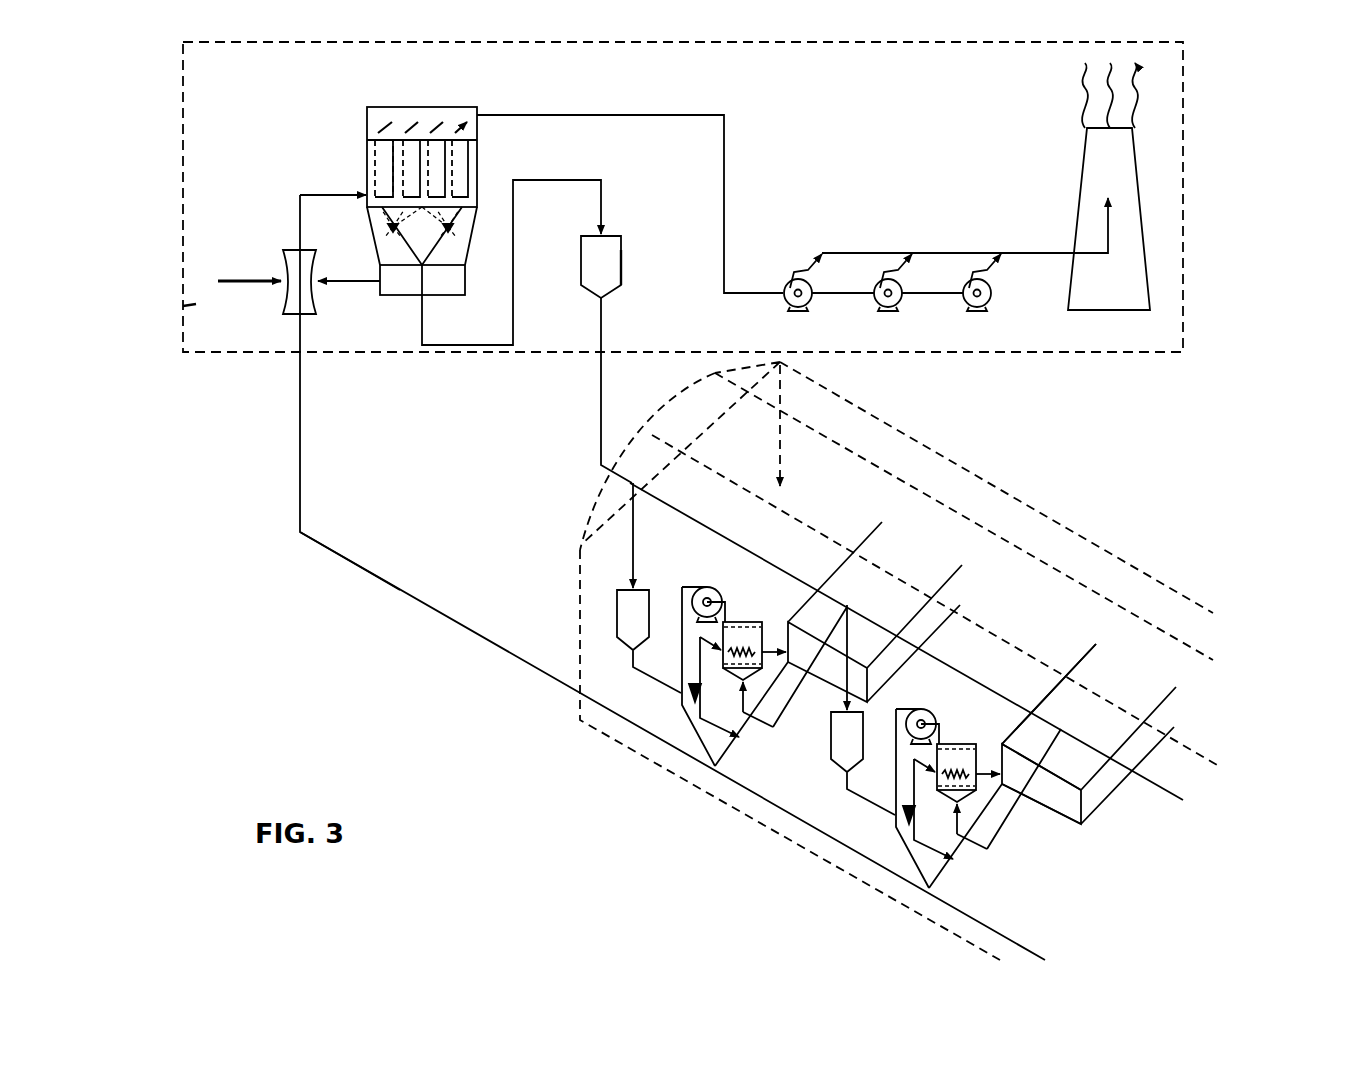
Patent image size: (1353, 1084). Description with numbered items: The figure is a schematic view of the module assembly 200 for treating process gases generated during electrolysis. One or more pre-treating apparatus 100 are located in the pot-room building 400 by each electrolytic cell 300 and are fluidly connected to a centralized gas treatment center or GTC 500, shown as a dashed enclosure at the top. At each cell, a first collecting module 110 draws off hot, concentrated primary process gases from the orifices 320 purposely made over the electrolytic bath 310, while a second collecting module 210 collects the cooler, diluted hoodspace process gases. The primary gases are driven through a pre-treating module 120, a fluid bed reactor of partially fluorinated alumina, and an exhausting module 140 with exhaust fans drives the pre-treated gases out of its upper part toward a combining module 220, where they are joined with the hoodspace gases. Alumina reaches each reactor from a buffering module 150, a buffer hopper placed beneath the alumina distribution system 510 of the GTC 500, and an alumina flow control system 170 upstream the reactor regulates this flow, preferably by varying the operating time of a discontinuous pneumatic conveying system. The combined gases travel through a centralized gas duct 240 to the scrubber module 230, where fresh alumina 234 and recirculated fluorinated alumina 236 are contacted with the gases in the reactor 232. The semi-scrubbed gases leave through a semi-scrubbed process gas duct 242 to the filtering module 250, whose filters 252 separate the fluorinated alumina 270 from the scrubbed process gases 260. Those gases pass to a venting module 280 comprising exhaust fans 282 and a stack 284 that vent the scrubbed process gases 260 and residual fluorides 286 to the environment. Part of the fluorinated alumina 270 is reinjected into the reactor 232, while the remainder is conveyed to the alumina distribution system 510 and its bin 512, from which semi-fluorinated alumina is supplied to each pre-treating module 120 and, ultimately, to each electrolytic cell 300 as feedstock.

The apparatus 100 is at (607, 780).
The collecting unit 110 is at (788, 718).
The pre-treating unit 120 is at (750, 620).
The exhausting unit 140 is at (726, 582).
The buffering unit 150 is at (612, 615).
The alumina flow control system 170 is at (692, 705).
The module assembly 200 is at (247, 676).
The second collecting module 210 is at (1047, 765).
The combining module 220 is at (957, 867).
The scrubber module 230 is at (246, 298).
The reactor 232 is at (283, 303).
The fresh alumina 234 is at (238, 278).
The fluorinated alumina 236 is at (350, 285).
The centralized gas duct 240 is at (298, 404).
The semi-scrubbed process gas duct 242 is at (297, 207).
The filtering module 250 is at (348, 110).
The filters 252 is at (375, 150).
The scrubbed process gases 260 is at (428, 126).
The fluorinated alumina 270 is at (383, 217).
The venting module 280 is at (818, 188).
The exhaust fans 282 is at (800, 267).
The stack 284 is at (1078, 213).
The residual fluorides 286 is at (1085, 110).
The electrolytic cell 300 is at (962, 583).
The electrolytic bath 310 is at (1063, 805).
The orifices 320 is at (1068, 748).
The pot-room building 400 is at (695, 498).
The centralized gas treatment center 500 is at (920, 42).
The alumina distribution system 510 is at (634, 237).
The bin 512 is at (622, 272).